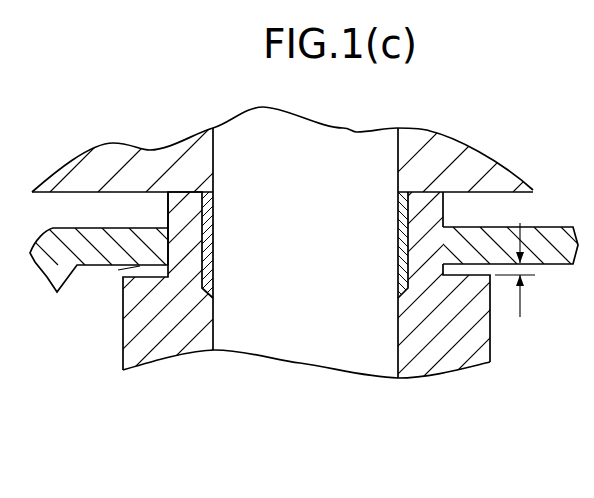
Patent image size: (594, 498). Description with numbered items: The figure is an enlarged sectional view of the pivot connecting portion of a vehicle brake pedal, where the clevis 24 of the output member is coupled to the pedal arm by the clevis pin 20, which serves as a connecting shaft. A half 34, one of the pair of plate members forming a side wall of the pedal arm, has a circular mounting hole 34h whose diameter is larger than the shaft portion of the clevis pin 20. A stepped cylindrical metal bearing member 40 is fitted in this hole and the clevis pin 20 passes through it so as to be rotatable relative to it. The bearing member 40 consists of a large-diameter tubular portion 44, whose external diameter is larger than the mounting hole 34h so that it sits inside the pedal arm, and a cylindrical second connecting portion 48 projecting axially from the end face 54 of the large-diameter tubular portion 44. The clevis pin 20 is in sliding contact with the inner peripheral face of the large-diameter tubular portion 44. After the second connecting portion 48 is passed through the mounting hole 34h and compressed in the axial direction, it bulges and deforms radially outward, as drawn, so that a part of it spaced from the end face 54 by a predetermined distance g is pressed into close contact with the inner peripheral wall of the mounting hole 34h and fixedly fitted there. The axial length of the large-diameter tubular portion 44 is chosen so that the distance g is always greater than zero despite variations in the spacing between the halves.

The clevis pin 20 is at (343, 150).
The clevis 24 is at (113, 160).
The half 34 is at (540, 238).
The mounting hole 34h is at (171, 257).
The bearing member 40 is at (101, 357).
The large-diameter tubular portion 44 is at (460, 338).
The second connecting portion 48 is at (425, 217).
The end face 54 is at (140, 266).
The predetermined distance g is at (519, 270).